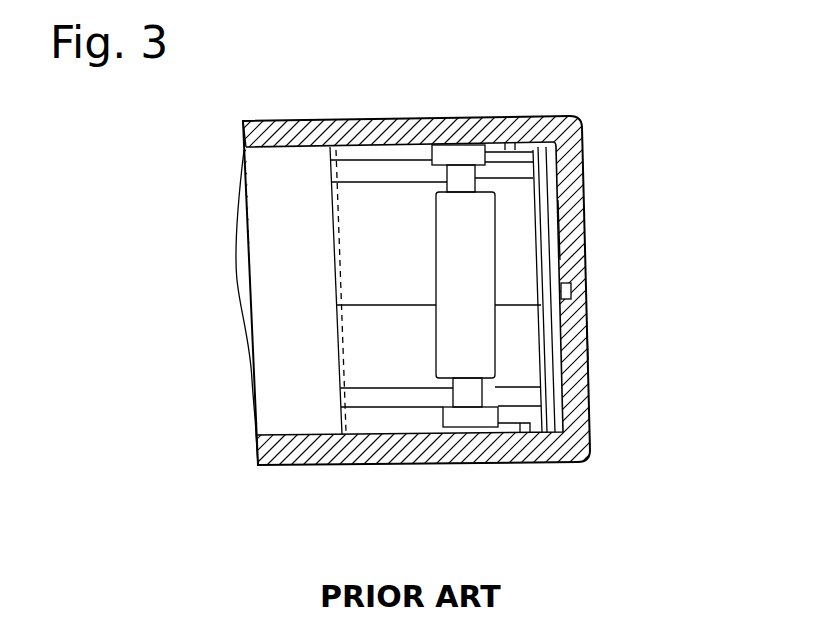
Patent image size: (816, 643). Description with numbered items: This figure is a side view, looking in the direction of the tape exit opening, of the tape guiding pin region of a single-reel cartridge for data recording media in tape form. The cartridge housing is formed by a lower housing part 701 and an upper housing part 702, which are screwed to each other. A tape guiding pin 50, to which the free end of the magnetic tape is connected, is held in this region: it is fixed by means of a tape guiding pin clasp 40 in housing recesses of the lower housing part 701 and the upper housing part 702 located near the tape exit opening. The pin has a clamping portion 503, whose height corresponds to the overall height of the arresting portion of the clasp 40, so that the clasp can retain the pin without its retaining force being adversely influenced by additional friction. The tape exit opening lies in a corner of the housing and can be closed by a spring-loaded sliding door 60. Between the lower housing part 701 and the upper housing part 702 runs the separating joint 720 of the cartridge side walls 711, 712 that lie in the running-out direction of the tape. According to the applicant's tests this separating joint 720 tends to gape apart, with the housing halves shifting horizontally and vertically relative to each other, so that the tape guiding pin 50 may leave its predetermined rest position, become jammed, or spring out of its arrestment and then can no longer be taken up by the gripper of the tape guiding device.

The tape guiding pin clasp 40 is at (578, 127).
The tape guiding pin 50 is at (460, 285).
The sliding door 60 is at (270, 222).
The clamping portion 503 is at (465, 152).
The lower housing part 701 is at (415, 325).
The upper housing part 702 is at (400, 218).
The cartridge side wall 711 is at (573, 345).
The cartridge side wall 712 is at (566, 220).
The separating joint 720 is at (570, 281).